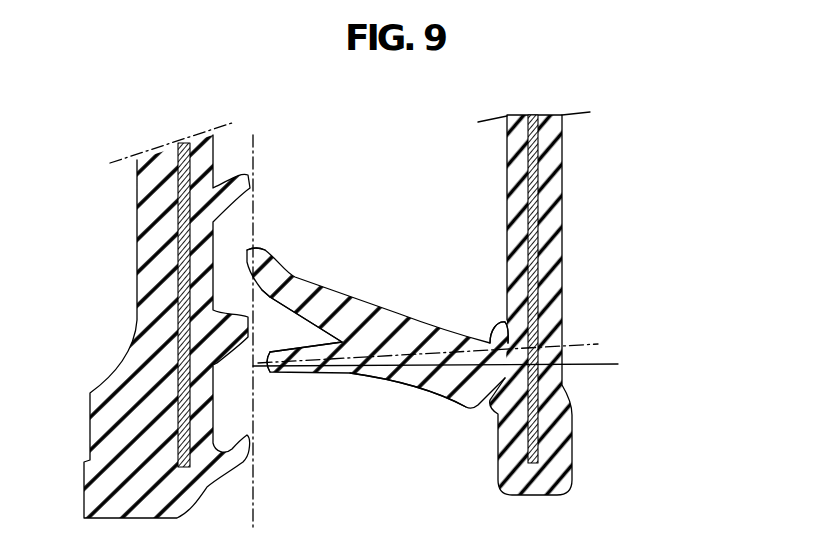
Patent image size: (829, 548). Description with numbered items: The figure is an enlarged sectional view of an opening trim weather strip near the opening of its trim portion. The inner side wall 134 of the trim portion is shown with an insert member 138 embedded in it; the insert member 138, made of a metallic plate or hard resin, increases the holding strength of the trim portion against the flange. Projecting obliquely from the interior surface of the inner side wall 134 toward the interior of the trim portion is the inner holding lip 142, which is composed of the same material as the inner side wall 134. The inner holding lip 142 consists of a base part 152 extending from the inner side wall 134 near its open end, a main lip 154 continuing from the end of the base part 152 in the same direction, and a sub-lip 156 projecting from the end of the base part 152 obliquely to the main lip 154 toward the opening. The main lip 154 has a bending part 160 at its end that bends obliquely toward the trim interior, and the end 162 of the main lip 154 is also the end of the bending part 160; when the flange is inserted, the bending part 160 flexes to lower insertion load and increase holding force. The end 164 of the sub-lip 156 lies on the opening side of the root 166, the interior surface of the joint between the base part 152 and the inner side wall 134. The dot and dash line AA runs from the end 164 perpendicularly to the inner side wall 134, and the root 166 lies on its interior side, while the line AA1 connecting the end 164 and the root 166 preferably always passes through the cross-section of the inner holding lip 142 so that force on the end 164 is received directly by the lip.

The inner side wall 134 is at (562, 245).
The insert member 138 is at (562, 183).
The inner holding lip 142 is at (392, 302).
The base part 152 is at (412, 380).
The main lip 154 is at (332, 302).
The sub-lip 156 is at (305, 374).
The bending part 160 is at (274, 263).
The end of the main lip 162 is at (252, 244).
The end of the sub-lip 164 is at (267, 372).
The root 166 is at (503, 321).
The line connecting the end of the sub-lip and the root AA1 is at (598, 344).
The dot and dash line AA is at (587, 365).